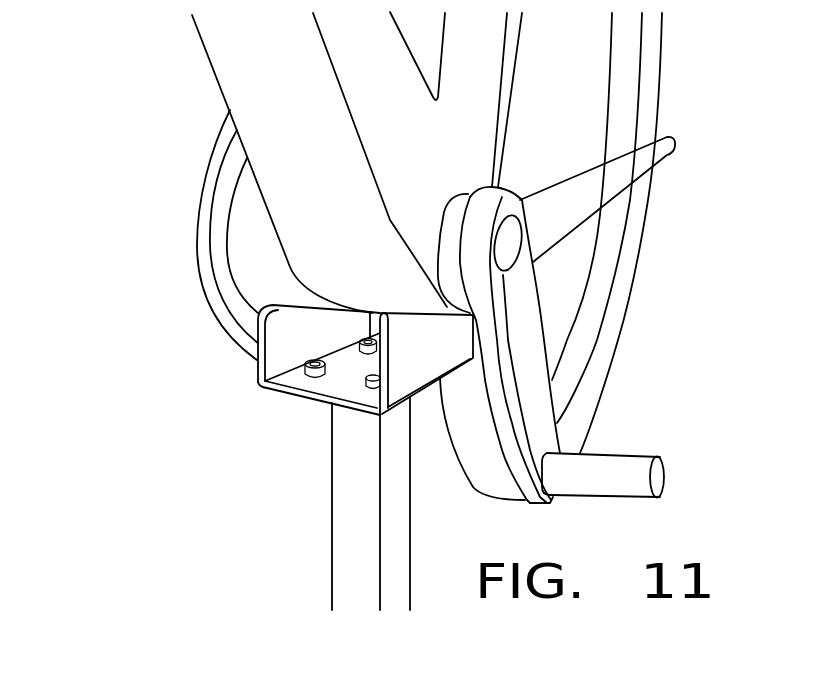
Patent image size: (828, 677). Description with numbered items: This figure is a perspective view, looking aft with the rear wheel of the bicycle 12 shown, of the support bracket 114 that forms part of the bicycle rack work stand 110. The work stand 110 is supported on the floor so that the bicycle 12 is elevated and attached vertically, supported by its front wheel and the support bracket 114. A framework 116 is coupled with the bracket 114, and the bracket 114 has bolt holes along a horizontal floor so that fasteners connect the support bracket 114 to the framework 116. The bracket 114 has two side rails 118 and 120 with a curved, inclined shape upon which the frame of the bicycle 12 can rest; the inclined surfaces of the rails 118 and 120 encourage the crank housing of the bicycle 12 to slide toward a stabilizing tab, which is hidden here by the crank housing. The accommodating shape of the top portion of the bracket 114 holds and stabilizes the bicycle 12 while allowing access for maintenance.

The bicycle 12 is at (173, 245).
The bicycle rack work stand 110 is at (312, 457).
The support bracket 114 is at (310, 397).
The framework 116 is at (332, 533).
The side rail 118 is at (277, 329).
The side rail 120 is at (443, 364).